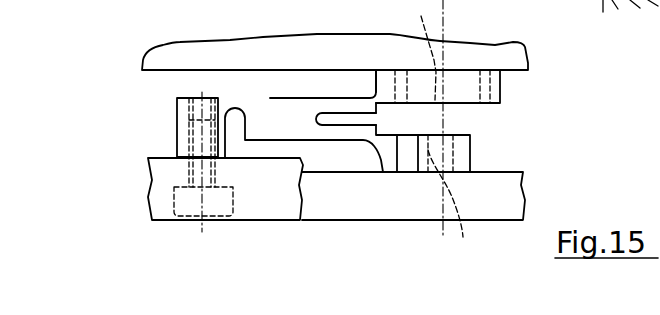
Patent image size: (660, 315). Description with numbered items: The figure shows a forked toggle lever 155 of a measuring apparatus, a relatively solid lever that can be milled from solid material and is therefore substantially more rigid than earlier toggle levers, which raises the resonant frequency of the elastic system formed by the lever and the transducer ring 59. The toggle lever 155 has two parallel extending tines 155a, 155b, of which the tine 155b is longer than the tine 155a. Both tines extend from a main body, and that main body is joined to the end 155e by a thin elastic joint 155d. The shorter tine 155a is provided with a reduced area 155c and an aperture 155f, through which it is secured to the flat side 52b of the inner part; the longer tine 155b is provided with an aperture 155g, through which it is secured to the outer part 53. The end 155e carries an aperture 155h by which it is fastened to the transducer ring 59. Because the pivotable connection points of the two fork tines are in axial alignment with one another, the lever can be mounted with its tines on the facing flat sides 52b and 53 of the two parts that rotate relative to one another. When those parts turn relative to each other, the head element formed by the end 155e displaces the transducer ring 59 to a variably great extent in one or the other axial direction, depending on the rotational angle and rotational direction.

The outer part 53 is at (473, 52).
The toggle lever 155 is at (277, 116).
The tine 155a is at (455, 152).
The tine 155b is at (450, 88).
The reduced area 155c is at (410, 152).
The thin elastic joint 155d is at (228, 103).
The end 155e is at (177, 131).
The aperture 155f is at (468, 210).
The aperture 155g is at (398, 50).
The aperture 155h is at (488, 102).
The transducer ring 59 is at (170, 169).
The flat side of part 52 52b is at (322, 203).